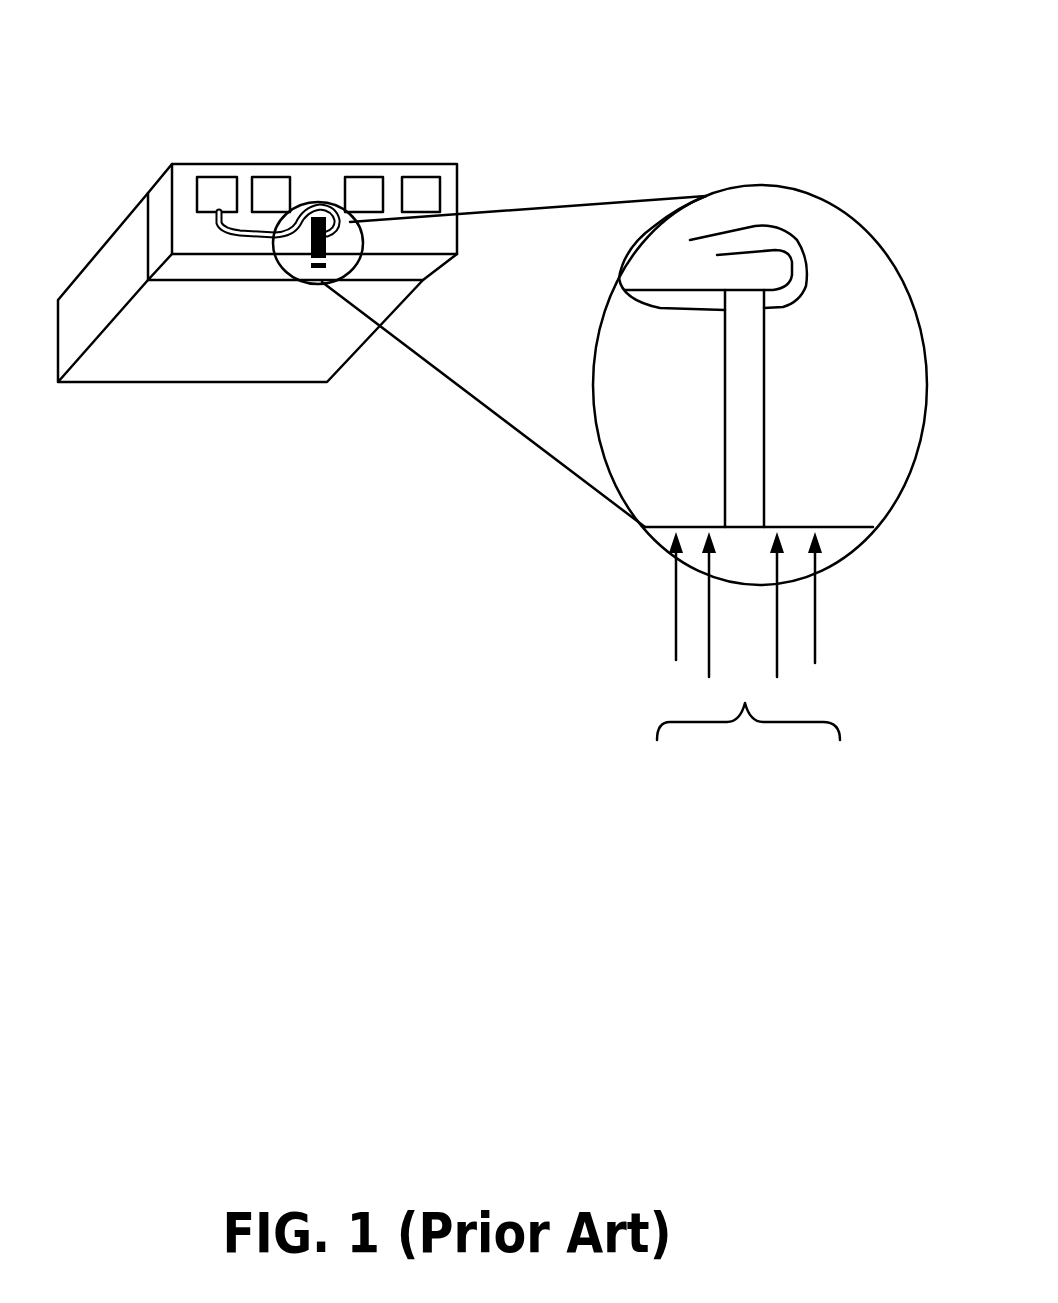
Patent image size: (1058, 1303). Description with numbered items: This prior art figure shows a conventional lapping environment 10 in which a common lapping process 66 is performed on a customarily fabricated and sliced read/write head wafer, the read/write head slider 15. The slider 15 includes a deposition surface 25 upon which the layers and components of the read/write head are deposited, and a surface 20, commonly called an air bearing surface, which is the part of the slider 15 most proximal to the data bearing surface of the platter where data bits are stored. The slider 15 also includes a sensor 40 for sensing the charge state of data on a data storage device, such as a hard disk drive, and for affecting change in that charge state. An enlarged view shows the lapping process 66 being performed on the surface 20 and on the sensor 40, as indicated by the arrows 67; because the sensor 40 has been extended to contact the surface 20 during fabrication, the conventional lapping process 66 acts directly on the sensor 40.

The lapping environment 10 is at (422, 27).
The read/write head slider 15 is at (97, 298).
The surface 20 is at (217, 352).
The deposition surface 25 is at (160, 200).
The sensor 40 is at (764, 423).
The lapping process 66 is at (748, 731).
The arrows 67 is at (708, 660).